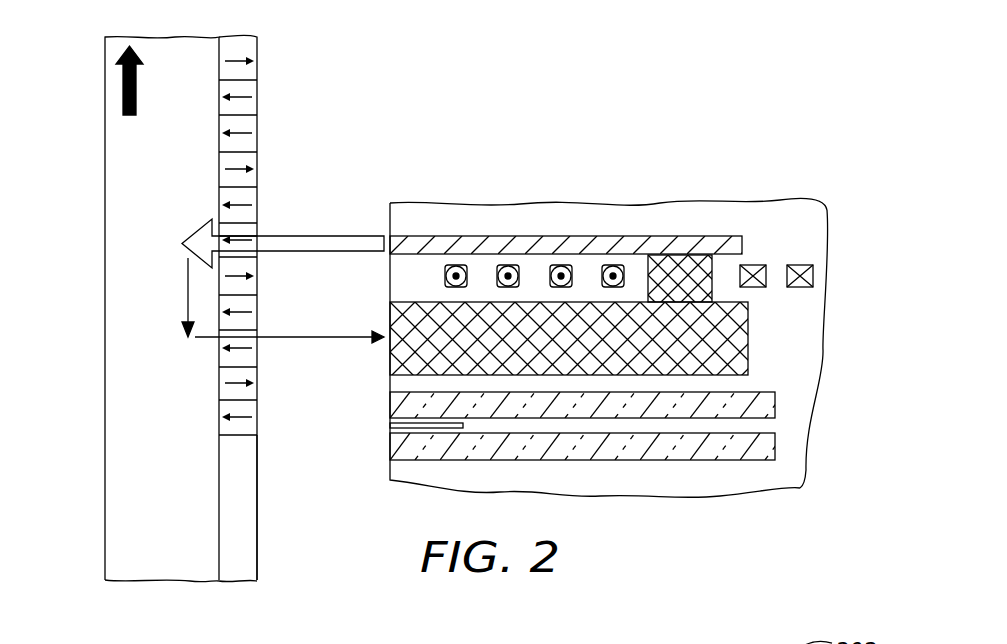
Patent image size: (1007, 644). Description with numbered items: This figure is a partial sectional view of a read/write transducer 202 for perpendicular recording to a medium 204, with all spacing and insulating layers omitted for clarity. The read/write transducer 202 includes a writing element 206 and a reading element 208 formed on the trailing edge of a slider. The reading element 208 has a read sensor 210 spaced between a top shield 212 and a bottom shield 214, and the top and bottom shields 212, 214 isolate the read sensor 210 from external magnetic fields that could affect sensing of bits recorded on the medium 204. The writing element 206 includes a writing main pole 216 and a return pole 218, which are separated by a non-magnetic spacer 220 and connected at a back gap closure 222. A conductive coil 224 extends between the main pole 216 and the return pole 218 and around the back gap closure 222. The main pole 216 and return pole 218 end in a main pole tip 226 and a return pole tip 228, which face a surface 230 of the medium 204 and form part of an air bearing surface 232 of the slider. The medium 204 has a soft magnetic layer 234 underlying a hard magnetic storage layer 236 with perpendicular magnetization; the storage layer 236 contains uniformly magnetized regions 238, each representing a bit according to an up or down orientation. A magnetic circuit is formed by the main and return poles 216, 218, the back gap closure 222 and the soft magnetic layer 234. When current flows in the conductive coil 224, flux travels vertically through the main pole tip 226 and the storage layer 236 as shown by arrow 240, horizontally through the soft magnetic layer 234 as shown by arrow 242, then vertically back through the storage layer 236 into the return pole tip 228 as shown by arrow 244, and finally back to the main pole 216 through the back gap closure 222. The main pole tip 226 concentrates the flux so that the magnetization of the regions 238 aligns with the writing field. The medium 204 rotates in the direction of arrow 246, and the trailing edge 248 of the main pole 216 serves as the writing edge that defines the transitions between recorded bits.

The read/write transducer 202 is at (776, 102).
The medium 204 is at (90, 60).
The writing element 206 is at (775, 240).
The reading element 208 is at (623, 438).
The read sensor 210 is at (390, 426).
The top shield 212 is at (758, 405).
The bottom shield 214 is at (758, 446).
The main pole 216 is at (722, 247).
The return pole 218 is at (728, 340).
The non-magnetic spacer 220 is at (403, 282).
The back gap closure 222 is at (683, 277).
The conductive coil 224 is at (561, 278).
The main pole tip 226 is at (390, 241).
The return pole tip 228 is at (390, 340).
The surface 230 is at (257, 465).
The air bearing surface 232 is at (390, 478).
The soft magnetic layer 234 is at (159, 562).
The storage layer 236 is at (237, 562).
The uniformly magnetized regions 238 is at (247, 124).
The arrow 240 is at (295, 236).
The arrow 242 is at (188, 297).
The arrow 244 is at (283, 338).
The arrow 246 is at (137, 63).
The trailing edge 248 is at (389, 237).